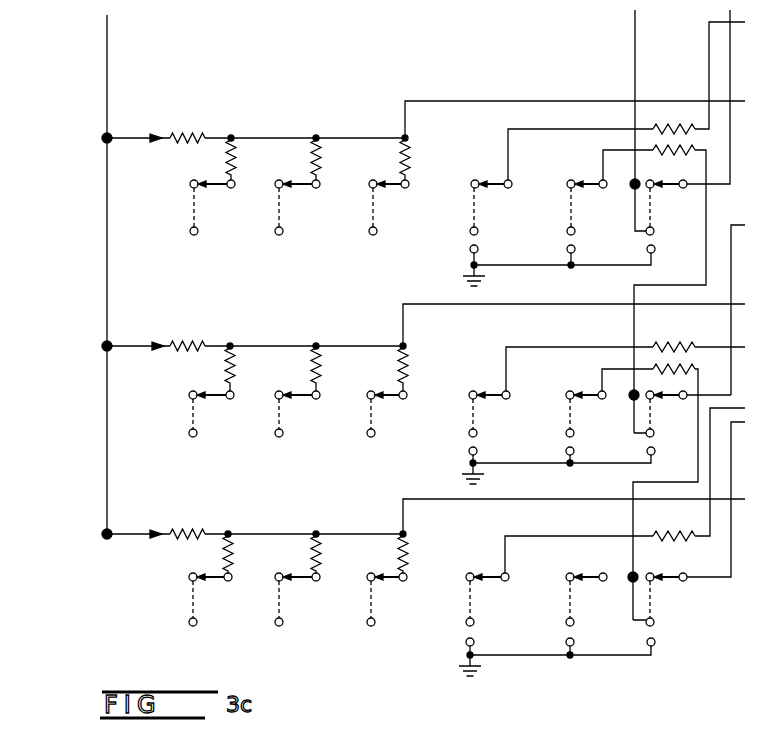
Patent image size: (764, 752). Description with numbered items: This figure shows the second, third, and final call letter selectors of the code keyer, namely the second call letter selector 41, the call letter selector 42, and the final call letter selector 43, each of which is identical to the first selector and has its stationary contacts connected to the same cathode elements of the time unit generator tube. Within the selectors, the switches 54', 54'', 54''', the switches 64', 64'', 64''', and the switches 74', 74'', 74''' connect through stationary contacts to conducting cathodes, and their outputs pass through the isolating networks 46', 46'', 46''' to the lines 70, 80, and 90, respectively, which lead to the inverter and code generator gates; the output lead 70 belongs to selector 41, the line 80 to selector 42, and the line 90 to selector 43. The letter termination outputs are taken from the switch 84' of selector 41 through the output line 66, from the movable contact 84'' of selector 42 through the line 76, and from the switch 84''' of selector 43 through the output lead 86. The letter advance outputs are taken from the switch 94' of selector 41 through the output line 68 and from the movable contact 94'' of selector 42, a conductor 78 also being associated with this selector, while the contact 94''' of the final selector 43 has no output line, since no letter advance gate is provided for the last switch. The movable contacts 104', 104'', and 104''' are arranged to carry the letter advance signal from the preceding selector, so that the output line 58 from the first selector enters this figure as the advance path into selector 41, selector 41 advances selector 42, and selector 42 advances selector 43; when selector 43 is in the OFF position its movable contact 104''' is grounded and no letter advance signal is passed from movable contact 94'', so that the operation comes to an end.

The second call letter selector 41 is at (53, 161).
The call letter selector 42 is at (77, 391).
The final call letter selector 43 is at (134, 571).
The isolating network 46' is at (257, 126).
The isolating network 46'' is at (256, 334).
The isolating network 46''' is at (256, 522).
The switch 54' is at (213, 186).
The switch 54'' is at (212, 391).
The switch 54''' is at (212, 580).
The switch 64' is at (298, 186).
The switch 64'' is at (298, 391).
The switch 64''' is at (299, 580).
The switch 74' is at (389, 186).
The switch 74'' is at (387, 391).
The switch 74''' is at (390, 580).
The switch 84' is at (559, 233).
The movable contact 84'' is at (558, 437).
The switch 84''' is at (557, 624).
The switch 94' is at (636, 289).
The movable contact 94'' is at (586, 428).
The contact 94''' is at (588, 615).
The movable contact 104' is at (688, 122).
The movable contact 104'' is at (680, 413).
The movable contact 104''' is at (686, 524).
The output line 58 is at (636, 69).
The output line 66 is at (556, 129).
The output line 68 is at (736, 227).
The output lead 70 is at (555, 101).
The line 76 is at (539, 347).
The conductor 78 is at (598, 380).
The line 80 is at (547, 304).
The output lead 86 is at (587, 533).
The line 90 is at (488, 499).